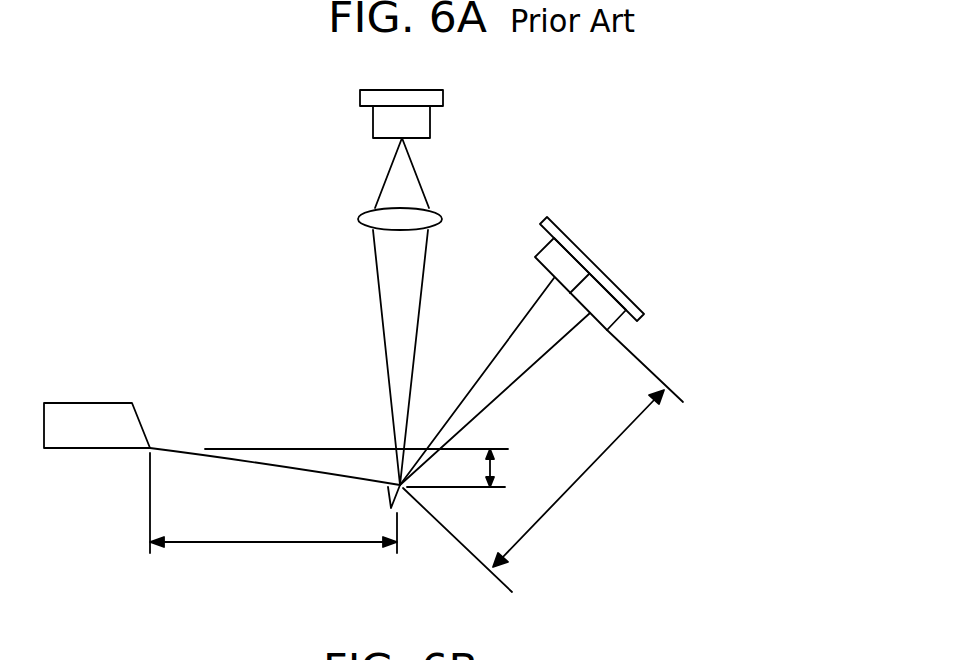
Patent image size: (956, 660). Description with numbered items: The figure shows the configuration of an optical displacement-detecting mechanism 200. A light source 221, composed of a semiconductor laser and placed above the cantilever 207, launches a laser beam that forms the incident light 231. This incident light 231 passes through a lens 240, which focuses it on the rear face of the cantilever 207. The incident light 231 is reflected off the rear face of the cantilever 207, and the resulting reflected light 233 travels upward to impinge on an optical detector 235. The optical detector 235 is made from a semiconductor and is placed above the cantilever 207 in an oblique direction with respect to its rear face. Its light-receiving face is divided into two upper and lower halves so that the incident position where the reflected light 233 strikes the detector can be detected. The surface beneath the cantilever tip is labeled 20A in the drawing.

The optical lever AFM detection system (prior art) 200 is at (598, 145).
The laser diode 221 is at (443, 100).
The lens 240 is at (423, 220).
The laser beam 231 is at (403, 310).
The position sensitive photodetector (PSPD) 235 is at (638, 300).
The reflected laser beam 233 is at (517, 378).
The cantilever 207 is at (268, 465).
The sample surface 20A is at (457, 540).